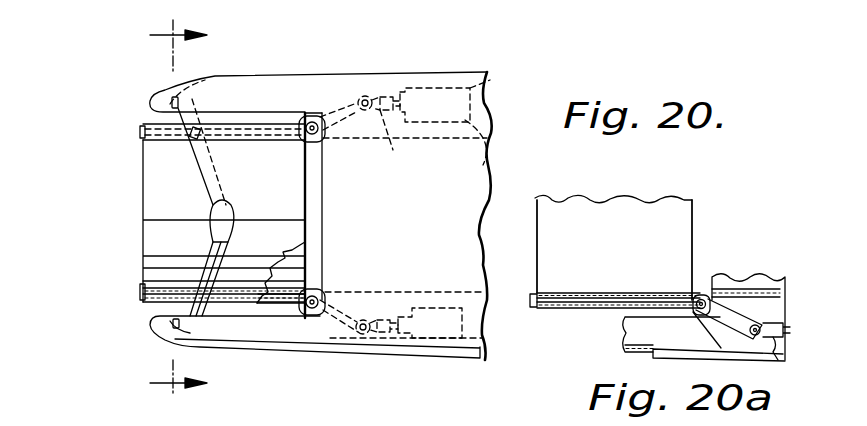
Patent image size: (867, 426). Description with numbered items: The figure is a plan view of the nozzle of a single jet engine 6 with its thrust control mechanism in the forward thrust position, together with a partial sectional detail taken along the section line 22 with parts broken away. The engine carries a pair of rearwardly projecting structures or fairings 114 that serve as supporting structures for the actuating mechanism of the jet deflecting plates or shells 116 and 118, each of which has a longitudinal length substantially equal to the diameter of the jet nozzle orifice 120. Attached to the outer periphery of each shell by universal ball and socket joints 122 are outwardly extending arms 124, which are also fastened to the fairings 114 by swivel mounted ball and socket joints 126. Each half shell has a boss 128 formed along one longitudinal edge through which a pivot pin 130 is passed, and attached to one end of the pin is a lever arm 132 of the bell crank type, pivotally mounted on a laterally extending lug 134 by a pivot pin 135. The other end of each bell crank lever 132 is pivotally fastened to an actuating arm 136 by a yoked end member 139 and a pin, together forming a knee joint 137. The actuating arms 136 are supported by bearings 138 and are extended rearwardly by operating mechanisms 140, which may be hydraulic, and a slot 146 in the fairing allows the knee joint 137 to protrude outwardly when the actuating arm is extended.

In FIG. 20, the single jet engine 6 is at (468, 172).
In FIG. 20, the section line 22 is at (155, 210).
In FIG. 20, the fairings 114 is at (160, 101).
In FIG. 20, the jet deflecting shell 116 is at (297, 258).
In FIG. 20A, the jet deflecting shell 116 is at (683, 238).
In FIG. 20, the jet deflecting shell 118 is at (155, 240).
In FIG. 20A, the jet deflecting shell 118 is at (613, 247).
In FIG. 20, the jet nozzle orifice 120 is at (483, 167).
In FIG. 20A, the jet nozzle orifice 120 is at (734, 289).
In FIG. 20, the universal ball and socket joint 122 is at (229, 213).
In FIG. 20, the outwardly extending arm 124 is at (207, 248).
In FIG. 20, the swivel mounted ball and socket joint 126 is at (212, 78).
In FIG. 20, the boss 128 is at (150, 124).
In FIG. 20A, the boss 128 is at (588, 292).
In FIG. 20, the pivot pin 130 is at (141, 131).
In FIG. 20A, the pivot pin 130 is at (533, 307).
In FIG. 20, the lever arm 132 is at (350, 130).
In FIG. 20A, the lever arm 132 is at (737, 320).
In FIG. 20, the laterally extending lug 134 is at (303, 116).
In FIG. 20A, the laterally extending lug 134 is at (699, 333).
In FIG. 20, the pivot pin 135 is at (305, 136).
In FIG. 20A, the pivot pin 135 is at (702, 299).
In FIG. 20, the actuating arm 136 is at (392, 92).
In FIG. 20A, the actuating arm 136 is at (788, 323).
In FIG. 20, the knee joint 137 is at (358, 97).
In FIG. 20, the bearing 138 is at (407, 93).
In FIG. 20, the yoked end member 139 is at (386, 307).
In FIG. 20A, the yoked end member 139 is at (768, 336).
In FIG. 20, the operating mechanism 140 is at (490, 79).
In FIG. 20A, the slot 146 is at (660, 352).